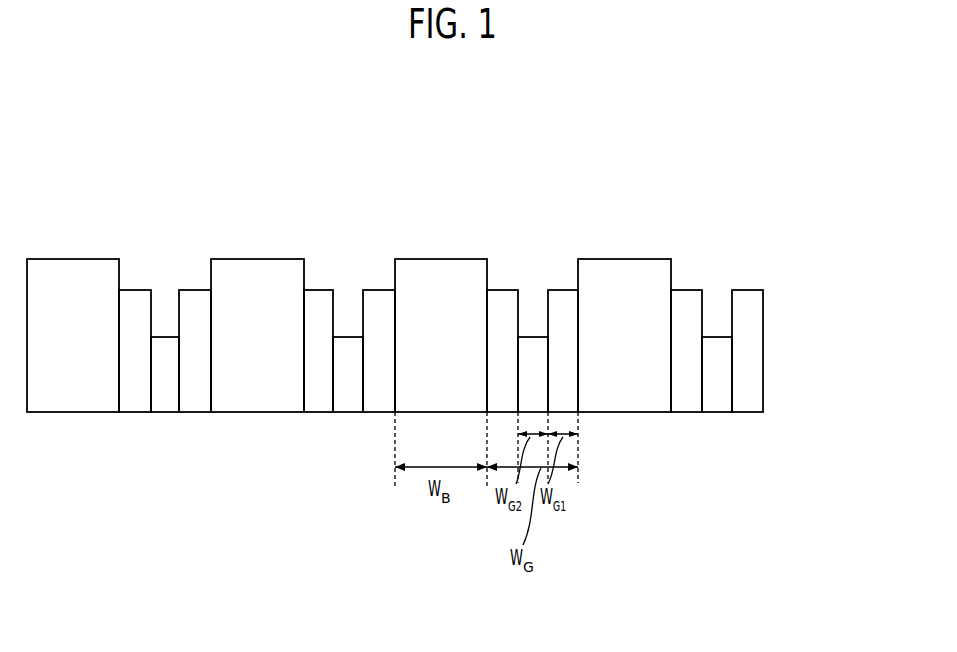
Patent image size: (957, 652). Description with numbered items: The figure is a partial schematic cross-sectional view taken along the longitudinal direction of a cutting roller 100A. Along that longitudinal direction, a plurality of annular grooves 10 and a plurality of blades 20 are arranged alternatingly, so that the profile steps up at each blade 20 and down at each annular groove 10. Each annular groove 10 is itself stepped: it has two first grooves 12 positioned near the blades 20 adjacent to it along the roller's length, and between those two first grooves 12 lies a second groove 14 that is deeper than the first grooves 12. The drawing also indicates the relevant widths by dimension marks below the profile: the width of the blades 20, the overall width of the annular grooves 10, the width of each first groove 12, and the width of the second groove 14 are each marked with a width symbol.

The cutting roller 100A is at (690, 230).
The blades 20 is at (212, 247).
The annular grooves 10 is at (303, 238).
The first grooves 12 is at (491, 289).
The second groove 14 is at (528, 336).